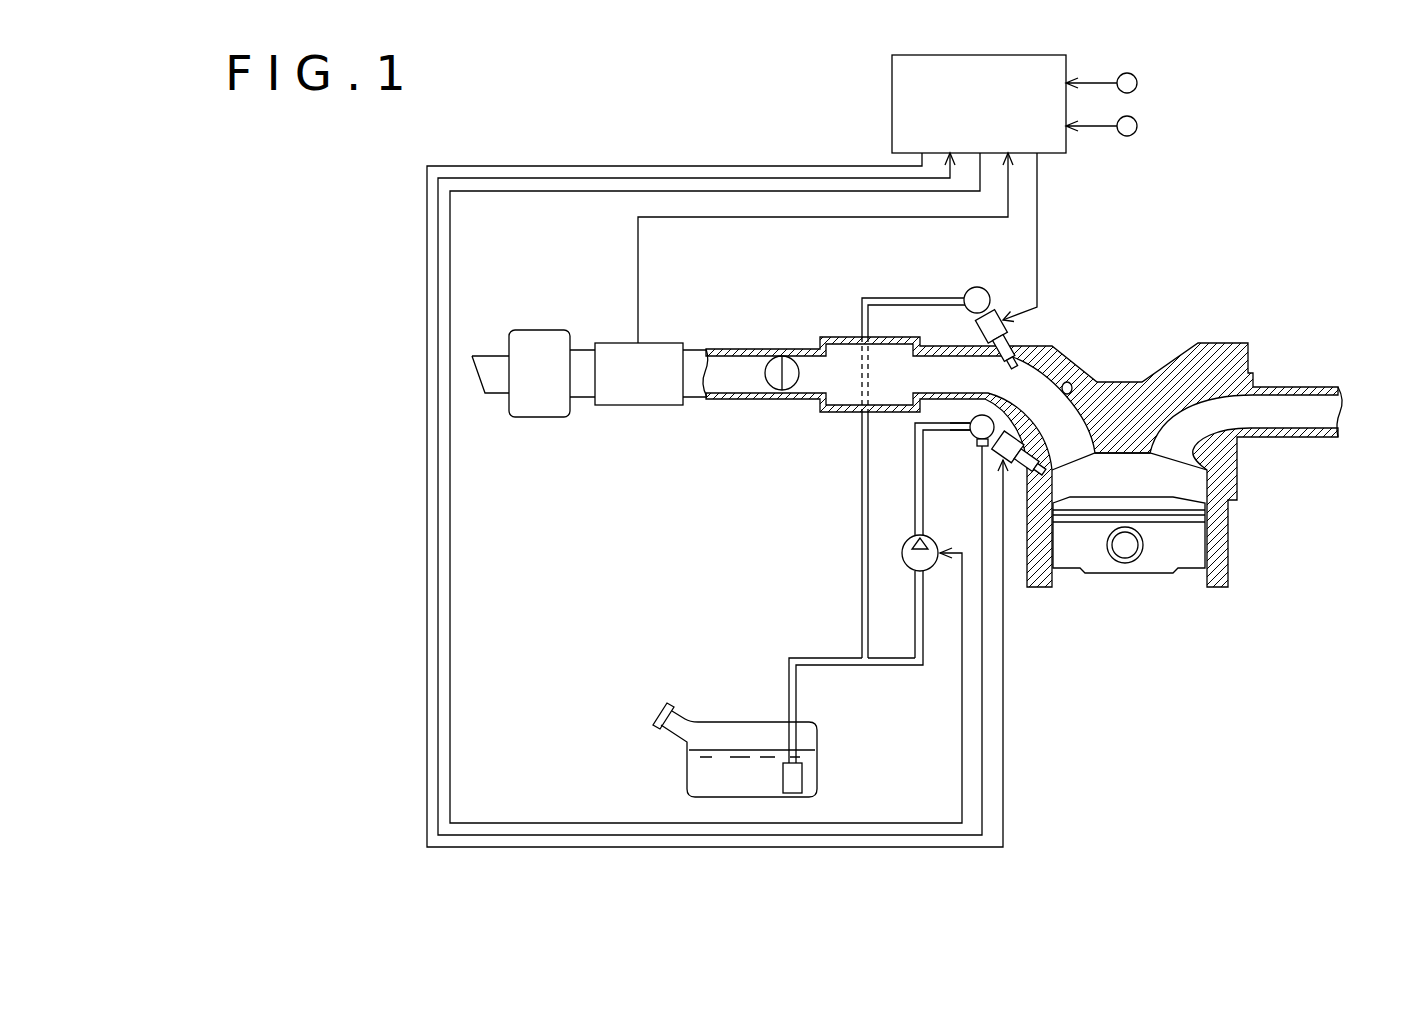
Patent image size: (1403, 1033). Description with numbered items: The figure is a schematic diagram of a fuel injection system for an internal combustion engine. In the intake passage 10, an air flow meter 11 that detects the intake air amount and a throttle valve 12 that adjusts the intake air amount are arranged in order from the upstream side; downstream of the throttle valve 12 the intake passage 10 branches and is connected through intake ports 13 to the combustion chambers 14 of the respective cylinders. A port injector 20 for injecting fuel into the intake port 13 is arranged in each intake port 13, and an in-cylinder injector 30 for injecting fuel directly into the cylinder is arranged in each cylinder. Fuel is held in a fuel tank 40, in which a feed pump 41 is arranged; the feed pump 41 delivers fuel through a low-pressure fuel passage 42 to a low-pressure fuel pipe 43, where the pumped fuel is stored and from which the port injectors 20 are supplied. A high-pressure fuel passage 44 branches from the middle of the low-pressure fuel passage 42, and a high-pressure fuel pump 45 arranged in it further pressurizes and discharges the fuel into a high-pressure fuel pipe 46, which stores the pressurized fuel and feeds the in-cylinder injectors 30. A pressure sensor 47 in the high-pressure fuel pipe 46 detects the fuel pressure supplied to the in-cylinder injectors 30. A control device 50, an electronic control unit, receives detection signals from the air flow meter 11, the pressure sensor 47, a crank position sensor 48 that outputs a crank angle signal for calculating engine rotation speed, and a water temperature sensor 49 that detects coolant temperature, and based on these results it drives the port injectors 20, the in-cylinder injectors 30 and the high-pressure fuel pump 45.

The intake passage 10 is at (729, 356).
The air flow meter 11 is at (661, 343).
The throttle valve 12 is at (794, 362).
The intake port 13 is at (1081, 380).
The combustion chamber 14 is at (1109, 487).
The port injector 20 is at (980, 337).
The in-cylinder injector 30 is at (996, 455).
The fuel tank 40 is at (687, 770).
The feed pump 41 is at (803, 778).
The low-pressure fuel passage 42 is at (860, 602).
The low-pressure fuel pipe 43 is at (977, 287).
The high-pressure fuel passage 44 is at (914, 600).
The high-pressure fuel pump 45 is at (903, 549).
The high-pressure fuel pipe 46 is at (974, 420).
The pressure sensor 47 is at (970, 437).
The crank position sensor 48 is at (1137, 83).
The water temperature sensor 49 is at (1137, 126).
The control device 50 is at (890, 100).